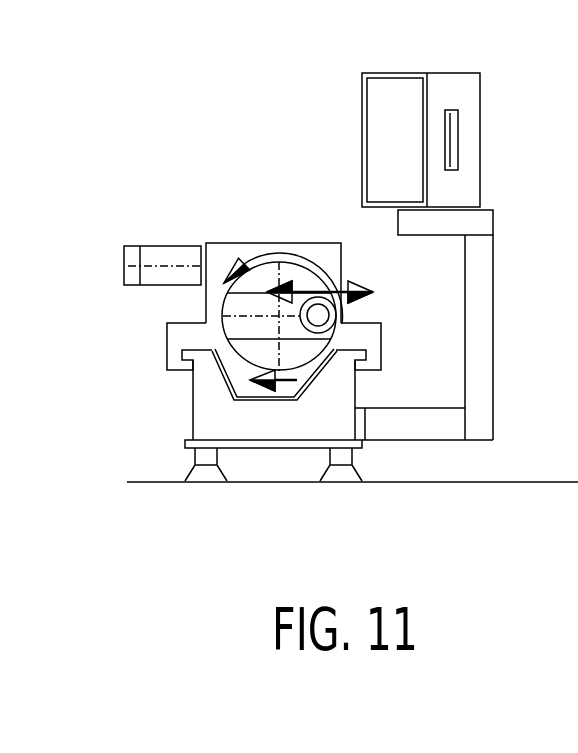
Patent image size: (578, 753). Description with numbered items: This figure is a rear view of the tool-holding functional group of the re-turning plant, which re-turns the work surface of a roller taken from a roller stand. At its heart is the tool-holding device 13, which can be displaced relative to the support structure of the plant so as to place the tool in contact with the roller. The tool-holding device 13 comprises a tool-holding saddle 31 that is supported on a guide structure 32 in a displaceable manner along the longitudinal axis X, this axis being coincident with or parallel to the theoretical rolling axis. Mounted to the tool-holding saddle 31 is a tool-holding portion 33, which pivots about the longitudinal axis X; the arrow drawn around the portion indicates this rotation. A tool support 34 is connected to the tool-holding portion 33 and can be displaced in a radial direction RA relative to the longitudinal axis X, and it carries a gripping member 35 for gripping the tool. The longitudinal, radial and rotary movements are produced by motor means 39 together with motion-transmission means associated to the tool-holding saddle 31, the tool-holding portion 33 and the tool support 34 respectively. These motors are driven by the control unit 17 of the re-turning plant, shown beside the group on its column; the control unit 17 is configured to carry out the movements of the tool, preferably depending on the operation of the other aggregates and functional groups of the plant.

The tool-holding device 13 is at (248, 207).
The control unit 17 is at (468, 152).
The tool-holding saddle 31 is at (218, 346).
The guide structure 32 is at (203, 375).
The tool-holding portion 33 is at (316, 324).
The tool support 34 is at (290, 352).
The gripping member 35 is at (314, 326).
The motor means 39 is at (158, 258).
The radial direction RA is at (374, 284).